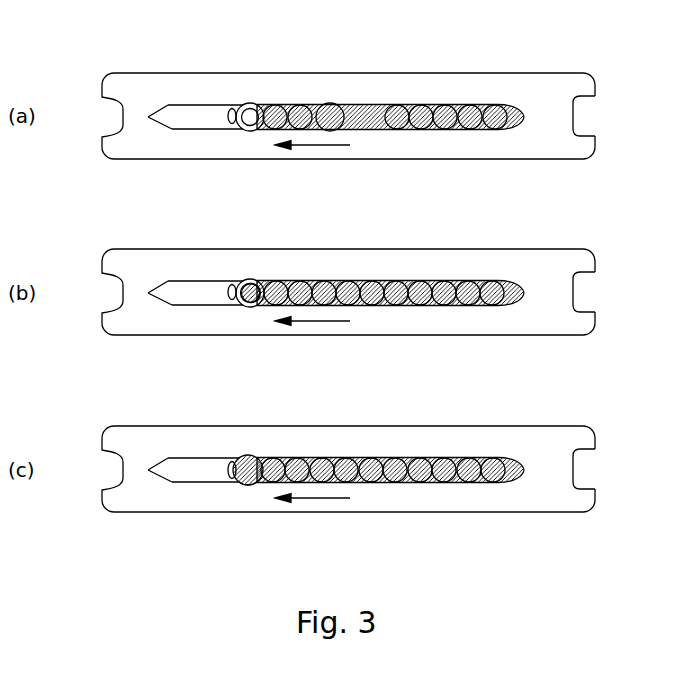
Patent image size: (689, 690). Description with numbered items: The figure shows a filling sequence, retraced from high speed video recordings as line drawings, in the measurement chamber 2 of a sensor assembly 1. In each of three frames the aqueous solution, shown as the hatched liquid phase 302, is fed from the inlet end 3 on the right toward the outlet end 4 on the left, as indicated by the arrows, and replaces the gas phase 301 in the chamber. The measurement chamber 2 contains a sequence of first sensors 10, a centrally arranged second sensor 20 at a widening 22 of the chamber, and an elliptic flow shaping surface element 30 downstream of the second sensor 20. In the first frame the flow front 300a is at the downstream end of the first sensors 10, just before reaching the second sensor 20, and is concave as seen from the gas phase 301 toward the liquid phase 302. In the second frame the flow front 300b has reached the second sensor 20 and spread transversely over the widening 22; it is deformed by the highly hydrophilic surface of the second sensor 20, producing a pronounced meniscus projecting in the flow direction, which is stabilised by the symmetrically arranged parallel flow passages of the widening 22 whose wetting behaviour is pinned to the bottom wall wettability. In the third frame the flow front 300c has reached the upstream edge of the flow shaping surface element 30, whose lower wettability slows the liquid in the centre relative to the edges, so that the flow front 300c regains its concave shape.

The sensor assembly 1 is at (328, 258).
The measurement chamber 2 is at (178, 116).
The inlet end 3 is at (556, 70).
The outlet end 4 is at (123, 72).
The first sensors 10 is at (333, 109).
The second sensor 20 is at (252, 113).
The widening 22 is at (246, 131).
The flow shaping surface element 30 is at (230, 124).
The gas phase 301 is at (205, 116).
The liquid phase 302 is at (373, 103).
The flow front 300a is at (272, 106).
The flow front 300b is at (254, 281).
The flow front 300c is at (232, 467).